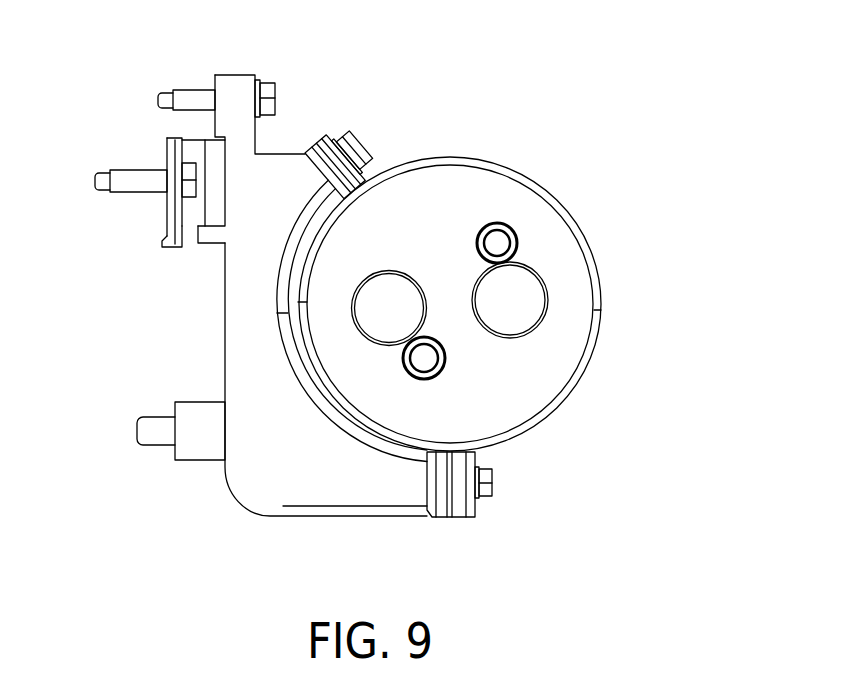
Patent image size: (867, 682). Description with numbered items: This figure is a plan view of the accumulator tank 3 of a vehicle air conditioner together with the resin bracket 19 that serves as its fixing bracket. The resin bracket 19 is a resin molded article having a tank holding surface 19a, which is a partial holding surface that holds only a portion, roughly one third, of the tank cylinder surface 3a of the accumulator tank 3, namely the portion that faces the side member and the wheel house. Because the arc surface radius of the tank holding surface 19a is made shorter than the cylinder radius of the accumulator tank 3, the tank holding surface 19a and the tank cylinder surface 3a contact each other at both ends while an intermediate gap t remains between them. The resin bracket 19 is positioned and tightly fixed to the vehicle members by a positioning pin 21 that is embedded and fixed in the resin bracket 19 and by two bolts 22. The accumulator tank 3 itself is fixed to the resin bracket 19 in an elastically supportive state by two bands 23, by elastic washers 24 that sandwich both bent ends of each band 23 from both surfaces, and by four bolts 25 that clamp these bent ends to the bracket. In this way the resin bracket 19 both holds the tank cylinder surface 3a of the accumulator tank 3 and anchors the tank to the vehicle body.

The accumulator tank 3 is at (537, 178).
The tank cylinder surface 3a is at (355, 422).
The resin bracket 19 is at (236, 500).
The tank holding surface 19a is at (308, 388).
The positioning pin 21 is at (160, 430).
The bolt 22 is at (265, 84).
The band 23 is at (338, 130).
The elastic washer 24 is at (462, 500).
The bolt 25 is at (363, 157).
The intermediate gap t is at (332, 408).